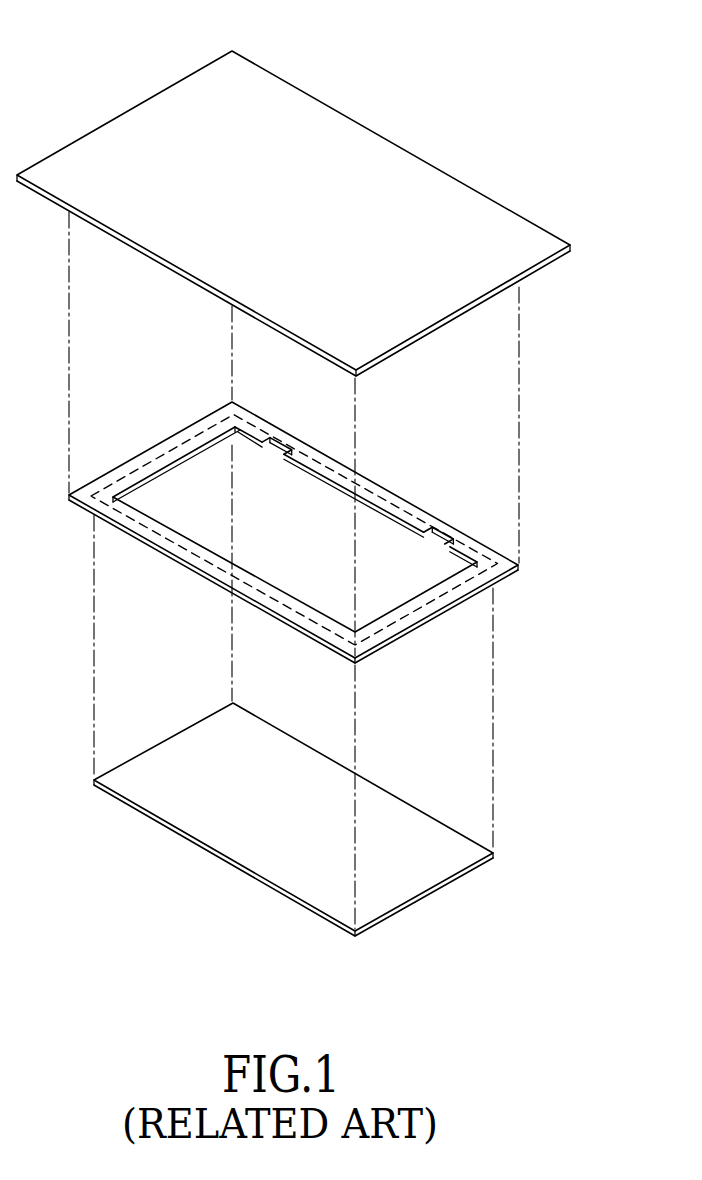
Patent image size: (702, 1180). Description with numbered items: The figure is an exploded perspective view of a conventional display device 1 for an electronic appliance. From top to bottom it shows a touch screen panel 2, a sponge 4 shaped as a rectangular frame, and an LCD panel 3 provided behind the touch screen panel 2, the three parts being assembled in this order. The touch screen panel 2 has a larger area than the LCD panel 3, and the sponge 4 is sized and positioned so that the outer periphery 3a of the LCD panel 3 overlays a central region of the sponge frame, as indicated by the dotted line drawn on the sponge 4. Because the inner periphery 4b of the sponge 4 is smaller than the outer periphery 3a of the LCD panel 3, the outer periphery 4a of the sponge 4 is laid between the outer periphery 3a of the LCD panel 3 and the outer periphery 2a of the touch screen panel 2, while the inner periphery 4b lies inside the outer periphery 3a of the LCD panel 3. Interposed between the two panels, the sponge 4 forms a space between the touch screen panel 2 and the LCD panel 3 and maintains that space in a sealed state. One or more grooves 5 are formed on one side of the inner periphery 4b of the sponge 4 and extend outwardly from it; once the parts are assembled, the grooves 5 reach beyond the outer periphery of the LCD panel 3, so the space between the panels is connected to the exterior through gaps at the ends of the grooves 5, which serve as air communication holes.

The display device 1 is at (75, 50).
The touch screen panel 2 is at (307, 213).
The outer periphery of the touch screen panel 2a is at (537, 273).
The LCD panel 3 is at (293, 827).
The outer periphery of the LCD panel 3a is at (428, 893).
The sponge 4 is at (293, 554).
The outer periphery of the sponge 4a is at (436, 617).
The inner periphery of the sponge 4b is at (387, 610).
The grooves 5 is at (447, 532).